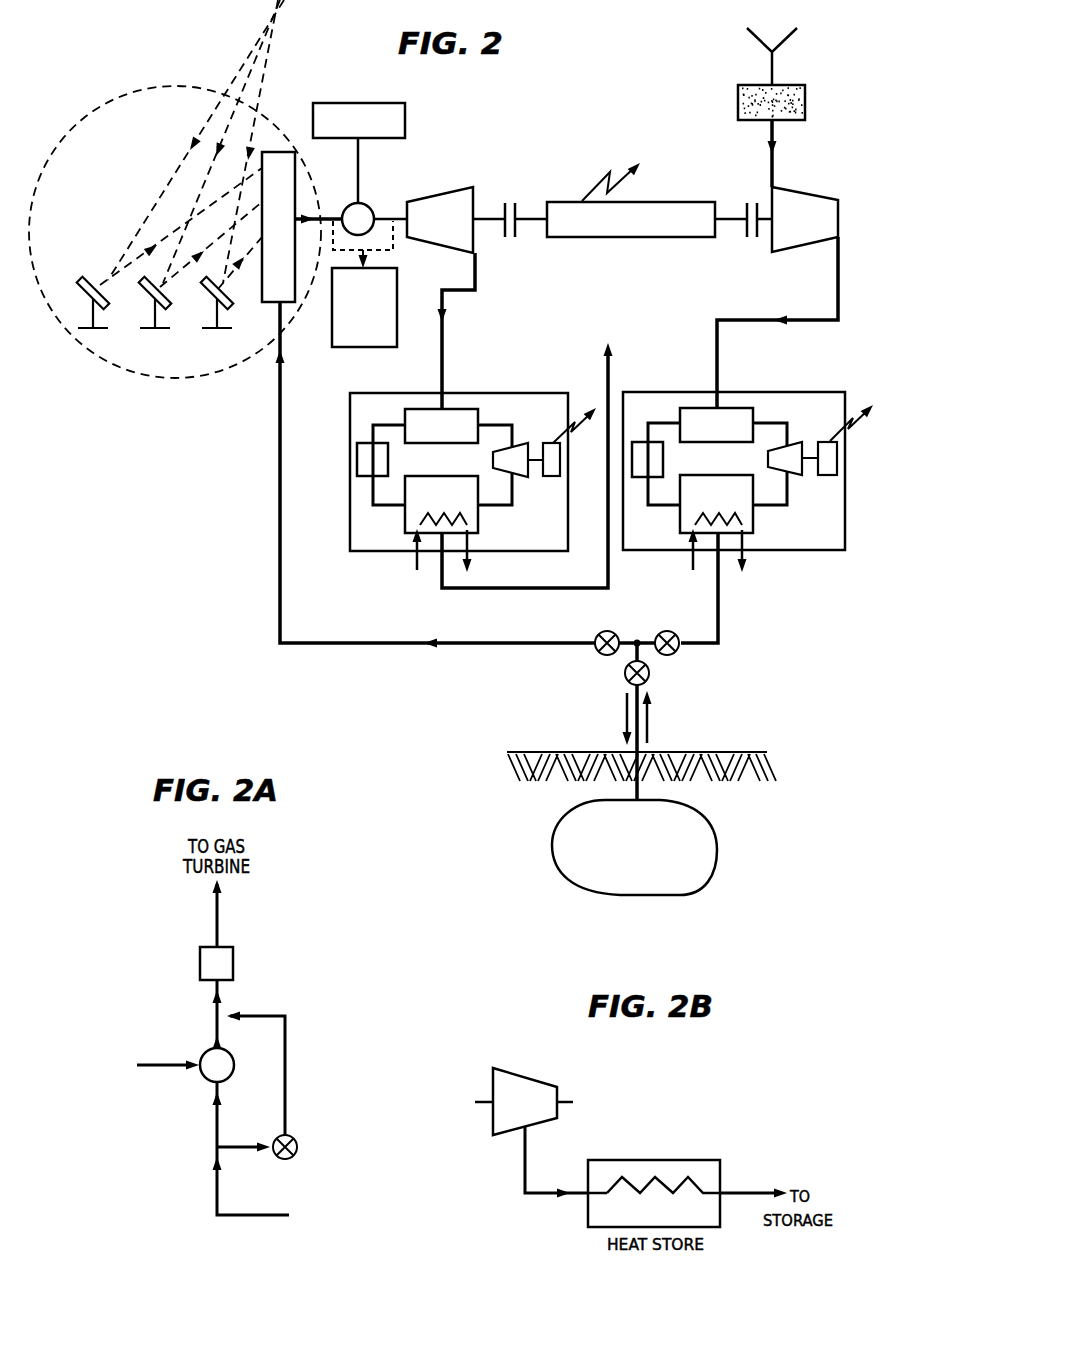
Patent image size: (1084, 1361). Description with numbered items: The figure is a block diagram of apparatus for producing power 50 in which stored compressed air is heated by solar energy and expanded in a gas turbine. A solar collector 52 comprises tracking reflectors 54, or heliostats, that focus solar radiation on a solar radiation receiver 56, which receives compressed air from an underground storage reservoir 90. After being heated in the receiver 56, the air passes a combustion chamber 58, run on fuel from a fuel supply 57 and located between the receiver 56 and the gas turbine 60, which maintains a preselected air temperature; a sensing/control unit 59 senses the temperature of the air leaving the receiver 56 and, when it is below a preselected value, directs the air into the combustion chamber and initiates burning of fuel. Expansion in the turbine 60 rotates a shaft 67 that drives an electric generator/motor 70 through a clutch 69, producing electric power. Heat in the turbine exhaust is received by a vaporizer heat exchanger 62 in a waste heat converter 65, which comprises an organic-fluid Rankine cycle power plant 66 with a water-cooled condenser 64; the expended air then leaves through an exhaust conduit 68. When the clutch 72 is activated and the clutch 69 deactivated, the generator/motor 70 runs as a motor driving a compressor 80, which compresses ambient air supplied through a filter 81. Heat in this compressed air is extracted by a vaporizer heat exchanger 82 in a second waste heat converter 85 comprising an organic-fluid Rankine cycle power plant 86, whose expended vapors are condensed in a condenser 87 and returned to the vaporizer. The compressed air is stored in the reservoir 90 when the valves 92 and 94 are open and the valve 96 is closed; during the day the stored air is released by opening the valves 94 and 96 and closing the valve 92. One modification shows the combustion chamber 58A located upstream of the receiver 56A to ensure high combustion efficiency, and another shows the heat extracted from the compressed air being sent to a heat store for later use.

In FIG. 2, the apparatus for producing power 50 is at (477, 136).
In FIG. 2, the solar collector 52 is at (161, 170).
In FIG. 2, the tracking reflectors 54 is at (97, 280).
In FIG. 2, the solar radiation receiver 56 is at (278, 152).
In FIG. 2, the fuel supply 57 is at (357, 103).
In FIG. 2, the combustion chamber 58 is at (347, 206).
In FIG. 2, the sensing/control unit 59 is at (337, 348).
In FIG. 2, the gas turbine 60 is at (418, 192).
In FIG. 2, the vaporizer heat exchanger 62 is at (428, 409).
In FIG. 2, the condenser 64 is at (405, 528).
In FIG. 2, the waste heat converter 65 is at (498, 393).
In FIG. 2, the organic-fluid Rankine cycle power plant 66 is at (350, 480).
In FIG. 2, the shaft 67 is at (503, 207).
In FIG. 2, the exhaust conduit 68 is at (606, 385).
In FIG. 2, the clutch 69 is at (519, 208).
In FIG. 2, the electric generator/motor 70 is at (648, 194).
In FIG. 2, the clutch 72 is at (745, 208).
In FIG. 2, the compressor 80 is at (821, 190).
In FIG. 2B, the compressor 80 is at (515, 1073).
In FIG. 2, the filter 81 is at (760, 85).
In FIG. 2, the vaporizer heat exchanger 82 is at (732, 408).
In FIG. 2, the waste heat converter 85 is at (783, 392).
In FIG. 2, the organic-fluid Rankine cycle power plant 86 is at (690, 392).
In FIG. 2, the condenser 87 is at (680, 527).
In FIG. 2, the underground storage reservoir 90 is at (706, 832).
In FIG. 2, the valve 92 is at (676, 633).
In FIG. 2, the valve 94 is at (625, 674).
In FIG. 2, the valve 96 is at (596, 634).
In FIG. 2A, the solar radiation receiver 56A is at (200, 963).
In FIG. 2A, the combustion chamber 58A is at (203, 1079).